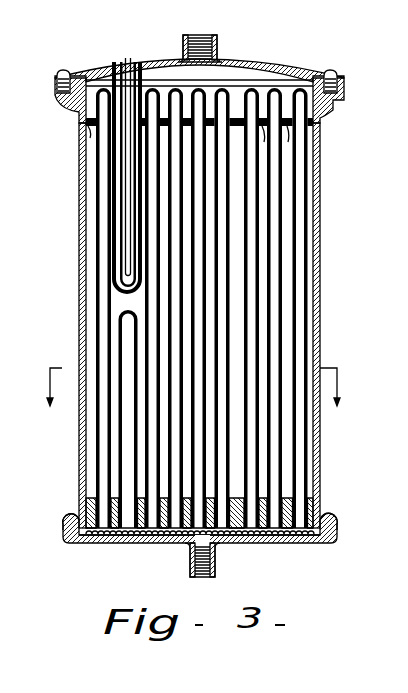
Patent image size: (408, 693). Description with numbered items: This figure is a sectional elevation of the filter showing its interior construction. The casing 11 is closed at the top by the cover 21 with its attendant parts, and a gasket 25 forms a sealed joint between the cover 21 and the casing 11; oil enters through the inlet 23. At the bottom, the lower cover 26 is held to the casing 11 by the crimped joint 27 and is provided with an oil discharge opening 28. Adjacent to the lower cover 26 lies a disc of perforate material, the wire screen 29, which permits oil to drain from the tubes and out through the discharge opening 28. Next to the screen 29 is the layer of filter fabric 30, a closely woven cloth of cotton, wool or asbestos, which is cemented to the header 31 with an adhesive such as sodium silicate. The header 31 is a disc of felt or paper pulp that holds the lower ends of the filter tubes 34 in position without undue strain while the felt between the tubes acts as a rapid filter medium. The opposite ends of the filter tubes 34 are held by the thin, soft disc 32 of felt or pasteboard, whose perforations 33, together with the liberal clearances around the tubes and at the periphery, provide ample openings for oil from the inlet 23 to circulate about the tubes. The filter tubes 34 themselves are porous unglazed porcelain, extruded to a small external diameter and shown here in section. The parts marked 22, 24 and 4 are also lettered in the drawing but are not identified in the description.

The casing 11 is at (321, 231).
The cover 21 is at (257, 64).
The clamping bolt 22 is at (333, 70).
The inlet 23 is at (206, 36).
The central outlet tube 24 is at (123, 68).
The gasket 25 is at (344, 83).
The lower cover 26 is at (290, 543).
The crimped joint 27 is at (64, 532).
The oil discharge opening 28 is at (217, 567).
The wire screen 29 is at (135, 545).
The filter fabric 30 is at (108, 543).
The header 31 is at (112, 495).
The disc 32 is at (323, 140).
The perforations 33 is at (86, 124).
The filter tubes 34 is at (272, 288).
The section line 4- 4 is at (193, 400).